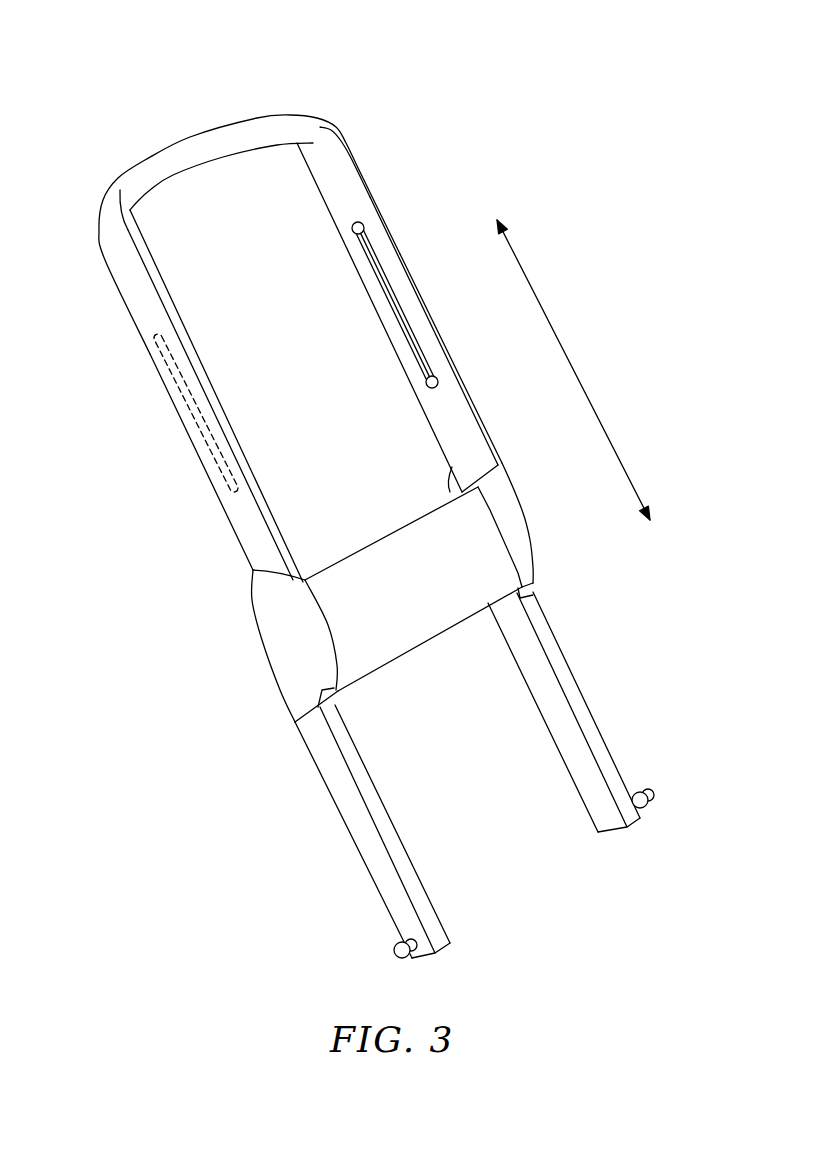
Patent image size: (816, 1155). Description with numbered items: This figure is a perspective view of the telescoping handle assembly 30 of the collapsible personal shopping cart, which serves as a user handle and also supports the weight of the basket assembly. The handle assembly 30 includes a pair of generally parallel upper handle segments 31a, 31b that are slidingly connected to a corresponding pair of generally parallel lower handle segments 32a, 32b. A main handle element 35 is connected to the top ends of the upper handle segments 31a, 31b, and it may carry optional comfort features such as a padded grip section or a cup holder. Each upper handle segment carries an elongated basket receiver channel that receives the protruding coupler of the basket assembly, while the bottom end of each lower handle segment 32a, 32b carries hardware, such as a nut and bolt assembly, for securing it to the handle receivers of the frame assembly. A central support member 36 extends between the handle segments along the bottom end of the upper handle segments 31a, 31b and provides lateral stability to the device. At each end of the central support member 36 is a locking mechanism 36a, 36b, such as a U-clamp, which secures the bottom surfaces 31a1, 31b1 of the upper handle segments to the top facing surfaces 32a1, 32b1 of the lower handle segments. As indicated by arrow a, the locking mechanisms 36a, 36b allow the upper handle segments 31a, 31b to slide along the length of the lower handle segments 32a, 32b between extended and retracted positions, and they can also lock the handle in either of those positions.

The telescoping handle assembly 30 is at (271, 307).
The main handle element 35 is at (160, 125).
The upper handle segment 31a is at (125, 378).
The upper handle segment 31b is at (410, 216).
The bottom surface of upper handle segment 31a1 is at (215, 538).
The bottom surface of upper handle segment 31b1 is at (420, 431).
The central support member 36 is at (414, 612).
The locking mechanism 36a is at (305, 648).
The locking mechanism 36b is at (536, 532).
The lower handle segment 32a is at (362, 835).
The lower handle segment 32b is at (605, 725).
The top facing surface of lower handle segment 32a1 is at (380, 820).
The top facing surface of lower handle segment 32b1 is at (563, 668).
The arrow a is at (573, 370).